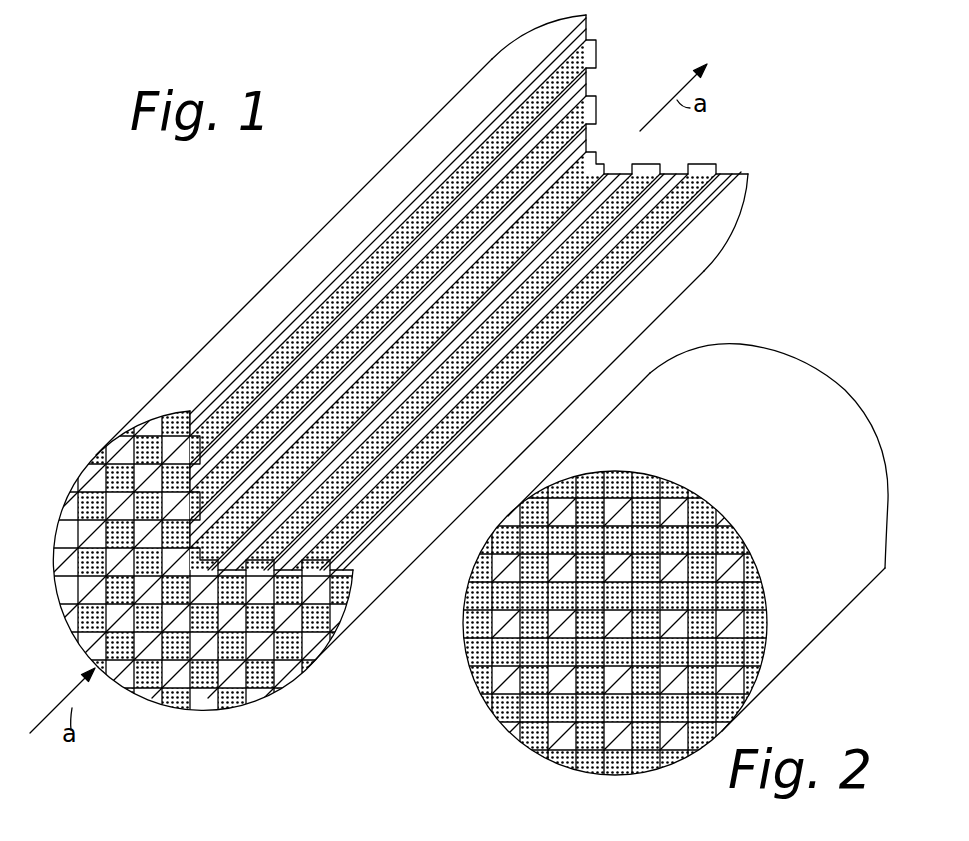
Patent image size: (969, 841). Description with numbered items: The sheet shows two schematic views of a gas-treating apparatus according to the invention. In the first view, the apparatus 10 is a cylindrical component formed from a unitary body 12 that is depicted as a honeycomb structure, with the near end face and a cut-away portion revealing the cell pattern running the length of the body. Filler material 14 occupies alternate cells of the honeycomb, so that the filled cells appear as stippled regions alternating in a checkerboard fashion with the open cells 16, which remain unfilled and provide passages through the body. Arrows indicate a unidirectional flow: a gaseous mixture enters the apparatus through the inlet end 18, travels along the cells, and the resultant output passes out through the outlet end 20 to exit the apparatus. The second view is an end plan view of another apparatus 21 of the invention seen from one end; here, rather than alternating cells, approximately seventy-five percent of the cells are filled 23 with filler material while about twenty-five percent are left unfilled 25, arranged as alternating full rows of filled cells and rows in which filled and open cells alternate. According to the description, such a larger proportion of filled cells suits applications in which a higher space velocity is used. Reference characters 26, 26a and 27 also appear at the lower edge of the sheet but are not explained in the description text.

In FIG. 1, the apparatus 10 is at (432, 112).
In FIG. 1, the unitary body 12 is at (381, 586).
In FIG. 1, the filler material 14 is at (648, 160).
In FIG. 1, the open cells 16 is at (581, 156).
In FIG. 1, the inlet end 18 is at (191, 712).
In FIG. 1, the outlet end 20 is at (609, 106).
In FIG. 2, the apparatus 21 is at (490, 706).
In FIG. 2, the filled cells 23 is at (478, 624).
In FIG. 2, the unfilled cells 25 is at (567, 751).
In FIG. 2, the element 26 is at (414, 834).
In FIG. 2, the element 26a is at (514, 836).
In FIG. 2, the element 27 is at (600, 839).